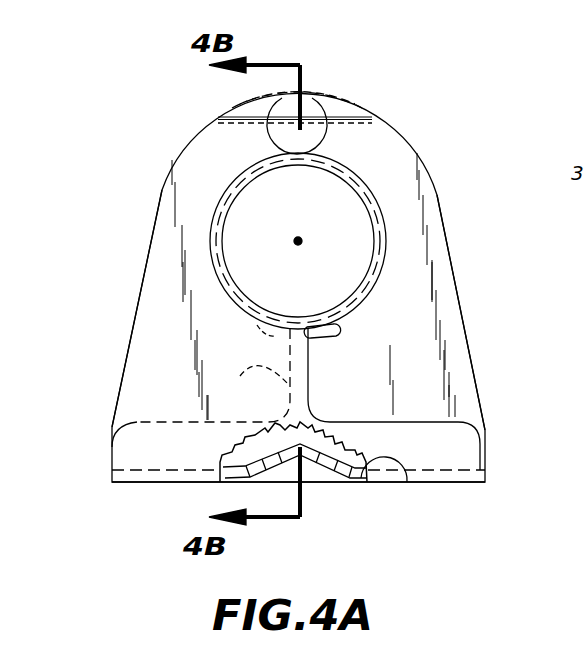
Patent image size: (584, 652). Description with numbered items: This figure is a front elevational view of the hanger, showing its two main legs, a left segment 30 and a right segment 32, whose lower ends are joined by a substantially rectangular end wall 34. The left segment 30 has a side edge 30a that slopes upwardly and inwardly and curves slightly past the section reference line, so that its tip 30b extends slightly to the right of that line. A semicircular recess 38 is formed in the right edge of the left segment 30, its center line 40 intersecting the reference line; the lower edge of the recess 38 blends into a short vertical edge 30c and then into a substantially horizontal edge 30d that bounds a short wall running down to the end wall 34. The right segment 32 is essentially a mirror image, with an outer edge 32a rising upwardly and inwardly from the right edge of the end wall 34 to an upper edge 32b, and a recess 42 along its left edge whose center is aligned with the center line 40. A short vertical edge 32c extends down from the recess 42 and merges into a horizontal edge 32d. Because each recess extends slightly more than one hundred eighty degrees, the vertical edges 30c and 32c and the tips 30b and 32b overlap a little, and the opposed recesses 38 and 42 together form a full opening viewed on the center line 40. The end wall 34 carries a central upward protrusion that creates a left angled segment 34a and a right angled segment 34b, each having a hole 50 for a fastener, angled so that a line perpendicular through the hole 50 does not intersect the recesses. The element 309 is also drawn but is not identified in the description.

The left segment 30 is at (118, 310).
The side edge 30a is at (152, 222).
The tip 30b is at (340, 107).
The short vertical edge 30c is at (312, 385).
The horizontal edge 30d is at (395, 422).
The right segment 32 is at (453, 218).
The outer edge 32a is at (460, 290).
The upper edge 32b is at (235, 104).
The short vertical edge 32c is at (254, 381).
The horizontal edge 32d is at (150, 425).
The end wall 34 is at (457, 477).
The left angled segment 34a is at (245, 470).
The right angled segment 34b is at (408, 480).
The recess 38 is at (220, 240).
The center line 40 is at (299, 240).
The recess 42 is at (360, 282).
The hole 50 is at (267, 477).
The tab 309 is at (336, 332).